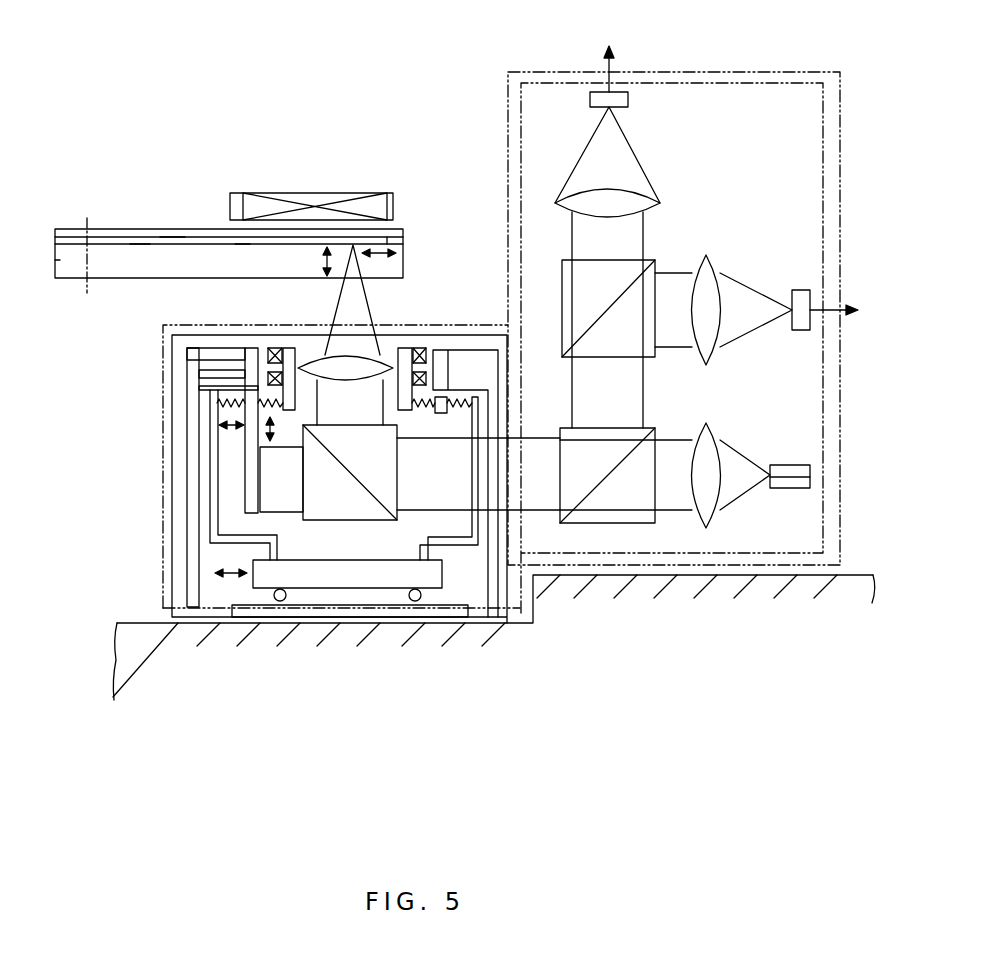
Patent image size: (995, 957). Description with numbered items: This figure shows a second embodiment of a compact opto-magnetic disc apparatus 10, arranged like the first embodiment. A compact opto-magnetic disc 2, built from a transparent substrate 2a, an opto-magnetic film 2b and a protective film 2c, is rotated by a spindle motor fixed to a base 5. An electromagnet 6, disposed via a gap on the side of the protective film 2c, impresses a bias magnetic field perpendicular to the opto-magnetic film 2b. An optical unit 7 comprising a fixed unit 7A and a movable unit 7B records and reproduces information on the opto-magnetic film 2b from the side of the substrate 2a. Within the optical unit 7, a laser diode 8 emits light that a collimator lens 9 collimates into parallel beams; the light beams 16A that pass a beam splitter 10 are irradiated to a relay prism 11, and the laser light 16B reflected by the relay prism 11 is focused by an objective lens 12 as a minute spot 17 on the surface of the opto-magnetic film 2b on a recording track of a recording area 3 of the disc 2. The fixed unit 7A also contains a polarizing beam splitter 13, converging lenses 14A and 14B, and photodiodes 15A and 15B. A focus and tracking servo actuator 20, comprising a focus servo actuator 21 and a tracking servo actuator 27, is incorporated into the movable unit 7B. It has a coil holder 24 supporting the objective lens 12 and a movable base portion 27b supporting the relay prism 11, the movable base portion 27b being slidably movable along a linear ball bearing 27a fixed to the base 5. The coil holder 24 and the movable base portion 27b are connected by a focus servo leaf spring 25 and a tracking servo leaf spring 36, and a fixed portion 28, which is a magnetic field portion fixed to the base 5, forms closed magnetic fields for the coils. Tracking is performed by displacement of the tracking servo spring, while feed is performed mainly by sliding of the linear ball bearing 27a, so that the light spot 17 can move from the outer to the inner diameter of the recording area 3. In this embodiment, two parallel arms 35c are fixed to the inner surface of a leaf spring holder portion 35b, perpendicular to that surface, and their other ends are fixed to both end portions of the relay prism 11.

The compact opto-magnetic disc 2 is at (72, 227).
The transparent substrate 2a is at (110, 253).
The opto-magnetic film 2b is at (140, 240).
The protective film 2c is at (170, 236).
The recording area 3 is at (240, 240).
The base 5 is at (128, 653).
The electromagnet 6 is at (314, 193).
The optical unit 7 is at (707, 72).
The fixed unit 7A is at (760, 83).
The movable unit 7B is at (163, 592).
The laser diode 8 is at (789, 465).
The collimator lens 9 is at (706, 424).
The beam splitter 10 is at (263, 124).
The relay prism 11 is at (302, 473).
The objective lens 12 is at (350, 372).
The polarizing beam splitter 13 is at (620, 260).
The converging lens 14A is at (650, 197).
The converging lens 14B is at (707, 257).
The photodiode 15A is at (628, 99).
The photodiode 15B is at (803, 290).
The light beams 16A is at (505, 522).
The laser light 16B is at (334, 307).
The minute spot 17 is at (357, 232).
The focus and tracking servo actuator 20 is at (110, 323).
The focus servo actuator 21 is at (247, 362).
The coil holder 24 is at (403, 350).
The focus servo leaf spring 25 is at (425, 410).
The tracking servo actuator 27 is at (247, 379).
The linear ball bearing 27a is at (366, 612).
The movable base portion 27b is at (300, 568).
The fixed portion 28 is at (436, 345).
The leaf spring holder portion 35b is at (258, 437).
The parallel arms 35c is at (270, 503).
The tracking servo leaf spring 36 is at (462, 410).